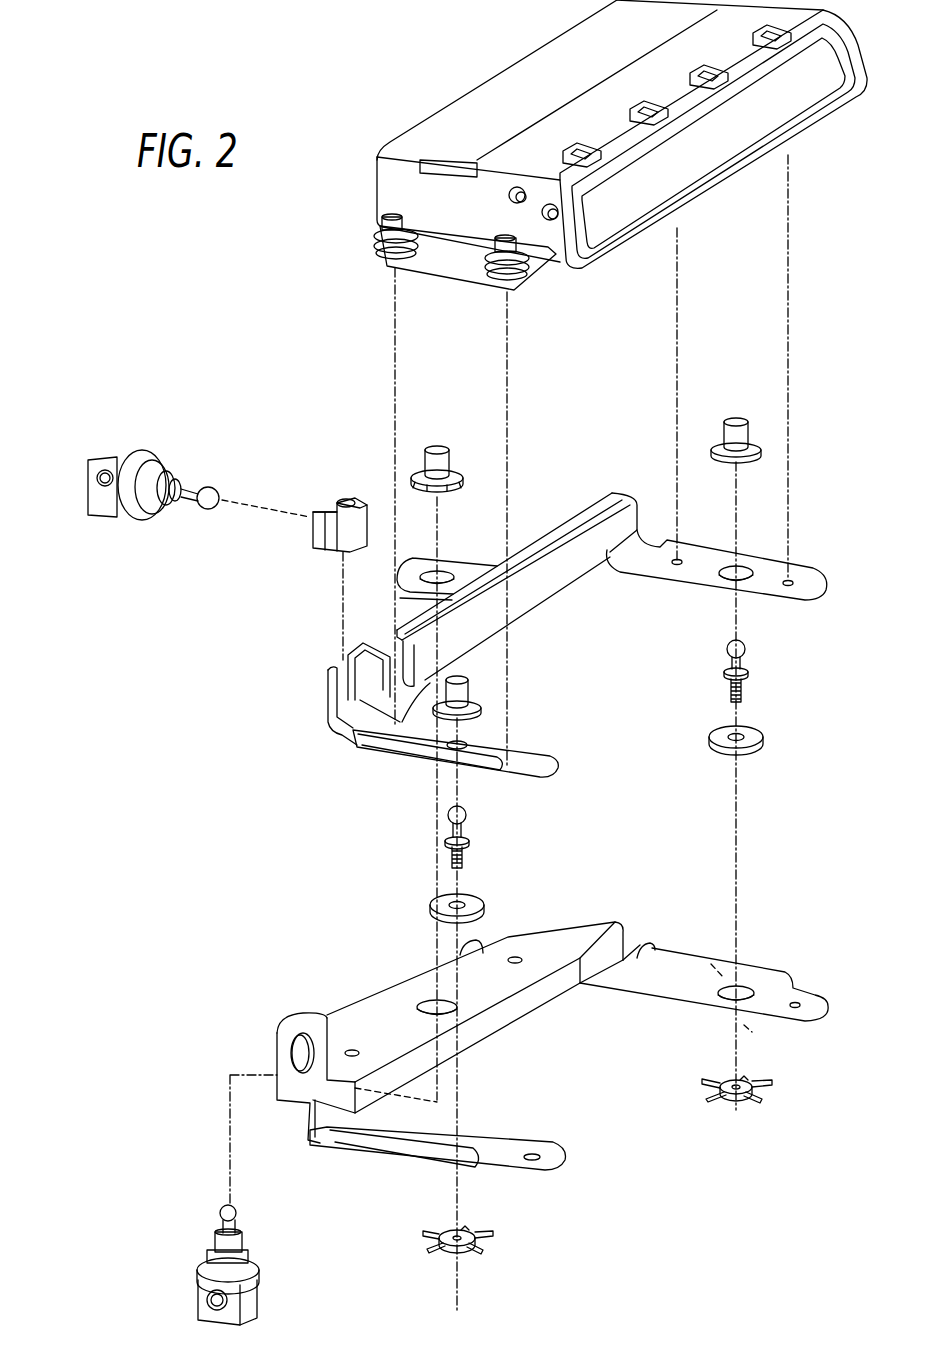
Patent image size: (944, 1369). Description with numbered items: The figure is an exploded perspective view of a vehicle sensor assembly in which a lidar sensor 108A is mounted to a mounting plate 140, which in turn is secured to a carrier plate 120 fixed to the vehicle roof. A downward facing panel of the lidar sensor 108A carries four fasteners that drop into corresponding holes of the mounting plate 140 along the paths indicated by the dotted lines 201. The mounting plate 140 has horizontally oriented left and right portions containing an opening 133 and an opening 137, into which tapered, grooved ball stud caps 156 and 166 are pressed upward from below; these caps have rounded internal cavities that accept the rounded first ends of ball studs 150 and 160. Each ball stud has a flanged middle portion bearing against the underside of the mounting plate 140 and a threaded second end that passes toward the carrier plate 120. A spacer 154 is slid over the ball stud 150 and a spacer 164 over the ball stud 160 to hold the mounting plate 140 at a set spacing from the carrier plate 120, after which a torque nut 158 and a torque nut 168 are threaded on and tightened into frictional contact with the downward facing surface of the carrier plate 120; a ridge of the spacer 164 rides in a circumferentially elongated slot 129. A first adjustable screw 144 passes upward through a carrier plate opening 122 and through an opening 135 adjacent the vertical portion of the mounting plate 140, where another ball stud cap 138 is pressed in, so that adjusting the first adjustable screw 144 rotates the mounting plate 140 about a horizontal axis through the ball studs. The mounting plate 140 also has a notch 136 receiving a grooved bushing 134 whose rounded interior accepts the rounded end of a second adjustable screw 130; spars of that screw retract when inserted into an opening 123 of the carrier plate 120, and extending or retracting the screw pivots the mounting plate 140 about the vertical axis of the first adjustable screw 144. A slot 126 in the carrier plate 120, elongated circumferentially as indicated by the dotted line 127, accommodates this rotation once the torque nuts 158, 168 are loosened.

The lidar sensor 108A is at (590, 84).
The carrier plate 120 is at (513, 990).
The carrier plate opening 122 is at (424, 1000).
The opening of carrier plate 123 is at (303, 1040).
The slot 126 is at (742, 993).
The dotted line 127 is at (802, 994).
The slot 129 is at (458, 1140).
The second adjustable screw 130 is at (87, 466).
The opening 133 is at (740, 568).
The bushing 134 is at (343, 497).
The opening 135 is at (443, 573).
The notch 136 is at (336, 660).
The opening 137 is at (467, 737).
The ball stud cap 138 is at (437, 447).
The mounting plate 140 is at (543, 580).
The first adjustable screw 144 is at (198, 1288).
The ball stud 150 is at (746, 659).
The spacer 154 is at (763, 739).
The ball stud cap 156 is at (740, 420).
The torque nut 158 is at (771, 1081).
The ball stud 160 is at (465, 832).
The spacer 164 is at (483, 907).
The ball stud cap 166 is at (460, 669).
The torque nut 168 is at (493, 1235).
The dotted lines 201 is at (395, 318).